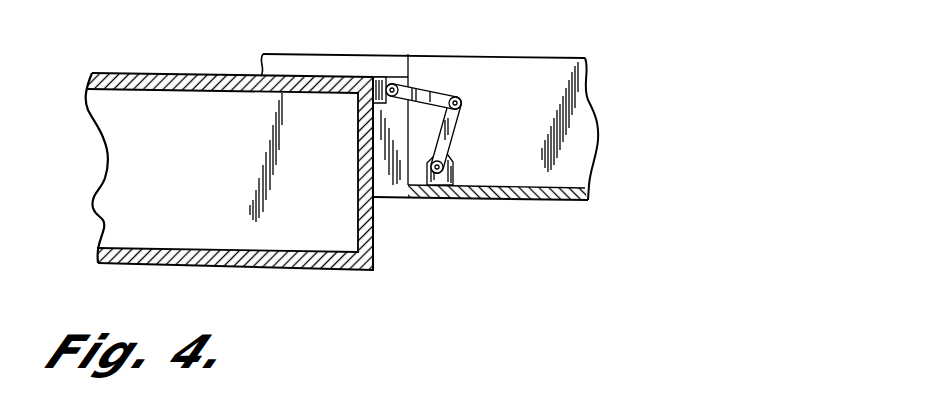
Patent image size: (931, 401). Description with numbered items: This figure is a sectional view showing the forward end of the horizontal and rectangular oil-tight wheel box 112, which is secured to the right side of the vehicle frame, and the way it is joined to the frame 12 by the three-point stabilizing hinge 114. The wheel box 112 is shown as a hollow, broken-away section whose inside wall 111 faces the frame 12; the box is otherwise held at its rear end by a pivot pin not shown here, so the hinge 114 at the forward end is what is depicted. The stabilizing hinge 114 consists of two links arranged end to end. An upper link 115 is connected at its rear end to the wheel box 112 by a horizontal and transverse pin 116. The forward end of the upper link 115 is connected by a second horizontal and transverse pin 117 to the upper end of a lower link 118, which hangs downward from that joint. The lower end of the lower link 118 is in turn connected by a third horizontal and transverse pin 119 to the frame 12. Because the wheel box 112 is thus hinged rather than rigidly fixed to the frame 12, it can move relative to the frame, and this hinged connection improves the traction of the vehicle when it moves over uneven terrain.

The door panel 12 is at (553, 202).
The inside wall 111 is at (207, 171).
The wheel box 112 is at (205, 229).
The three-point stabilizing hinge 114 is at (420, 127).
The upper link 115 is at (438, 87).
The pin 116 is at (386, 98).
The pin 117 is at (462, 92).
The lower link 118 is at (450, 130).
The pin 119 is at (440, 172).